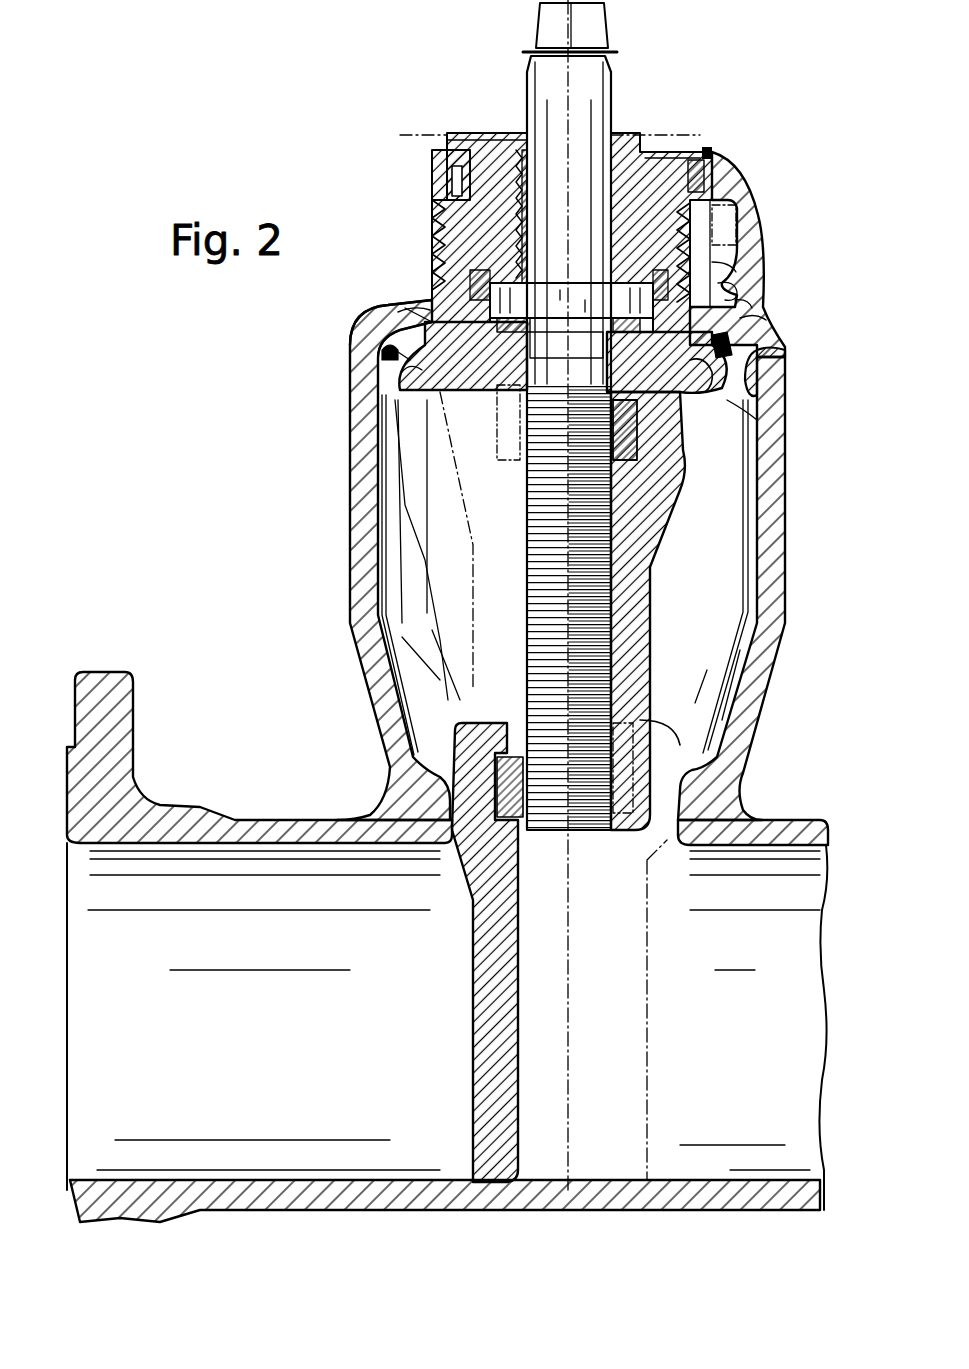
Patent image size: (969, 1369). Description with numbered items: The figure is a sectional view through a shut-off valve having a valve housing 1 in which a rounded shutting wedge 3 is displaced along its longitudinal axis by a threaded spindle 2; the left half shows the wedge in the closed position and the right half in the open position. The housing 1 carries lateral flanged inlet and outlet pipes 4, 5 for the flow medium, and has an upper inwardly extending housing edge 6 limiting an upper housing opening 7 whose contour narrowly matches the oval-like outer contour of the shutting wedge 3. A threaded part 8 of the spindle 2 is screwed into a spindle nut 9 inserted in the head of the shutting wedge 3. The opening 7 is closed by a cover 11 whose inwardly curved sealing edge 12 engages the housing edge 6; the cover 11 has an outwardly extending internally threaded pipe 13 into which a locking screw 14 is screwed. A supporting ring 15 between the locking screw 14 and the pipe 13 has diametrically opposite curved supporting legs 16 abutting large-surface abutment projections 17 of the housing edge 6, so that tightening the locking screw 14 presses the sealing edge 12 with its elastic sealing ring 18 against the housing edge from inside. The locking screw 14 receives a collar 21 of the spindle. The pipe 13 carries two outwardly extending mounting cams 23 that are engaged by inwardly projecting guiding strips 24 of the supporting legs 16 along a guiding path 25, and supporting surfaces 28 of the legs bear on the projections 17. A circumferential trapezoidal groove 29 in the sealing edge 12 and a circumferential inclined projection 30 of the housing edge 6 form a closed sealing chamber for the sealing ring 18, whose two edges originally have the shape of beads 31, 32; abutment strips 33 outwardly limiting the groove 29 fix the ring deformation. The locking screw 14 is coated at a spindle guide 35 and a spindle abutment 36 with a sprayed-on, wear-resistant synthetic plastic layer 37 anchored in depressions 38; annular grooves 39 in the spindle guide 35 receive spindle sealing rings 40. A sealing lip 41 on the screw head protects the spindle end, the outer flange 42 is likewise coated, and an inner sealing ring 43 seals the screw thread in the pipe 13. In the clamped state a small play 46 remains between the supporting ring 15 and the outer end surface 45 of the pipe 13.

The valve housing 1 is at (743, 717).
The threaded spindle 2 is at (612, 95).
The shutting wedge 3 is at (492, 1053).
The inlet pipe 4 is at (240, 832).
The outlet pipe 5 is at (767, 834).
The housing edge 6 is at (365, 342).
The housing opening 7 is at (440, 320).
The threaded part 8 is at (595, 632).
The spindle nut 9 is at (640, 448).
The cover 11 is at (446, 388).
The sealing edge 12 is at (716, 392).
The pipe 13 is at (432, 242).
The locking screw 14 is at (700, 165).
The supporting ring 15 is at (432, 176).
The supporting legs 16 is at (742, 212).
The abutment projections 17 is at (410, 313).
The elastic sealing ring 18 is at (400, 362).
The collar 21 is at (516, 382).
The mounting cams 23 is at (730, 242).
The guiding strips 24 is at (728, 292).
The guiding path 25 is at (730, 272).
The supporting surfaces 28 is at (742, 302).
The trapezoidal groove 29 is at (415, 365).
The inclined projection 30 is at (760, 372).
The bead 31 is at (735, 342).
The bead 32 is at (742, 385).
The abutment strips 33 is at (392, 357).
The spindle guide 35 is at (522, 168).
The spindle abutment 36 is at (490, 280).
The synthetic plastic layer 37 is at (515, 248).
The depressions 38 is at (505, 222).
The annular grooves 39 is at (505, 165).
The spindle sealing rings 40 is at (652, 138).
The sealing lip 41 is at (617, 137).
The flange 42 is at (712, 152).
The inner sealing ring 43 is at (706, 390).
The outer end surface 45 is at (452, 190).
The play 46 is at (712, 200).